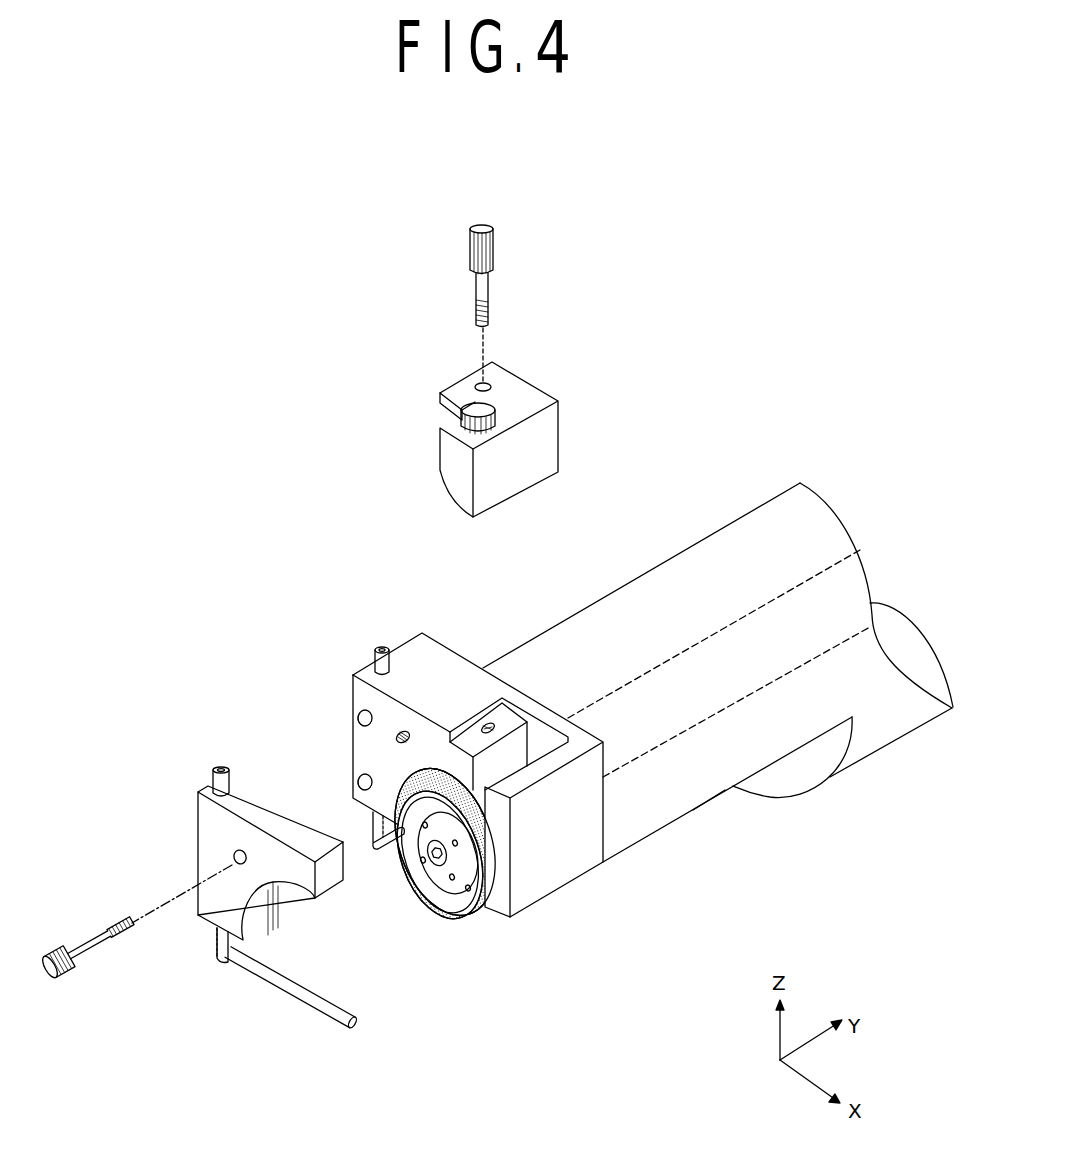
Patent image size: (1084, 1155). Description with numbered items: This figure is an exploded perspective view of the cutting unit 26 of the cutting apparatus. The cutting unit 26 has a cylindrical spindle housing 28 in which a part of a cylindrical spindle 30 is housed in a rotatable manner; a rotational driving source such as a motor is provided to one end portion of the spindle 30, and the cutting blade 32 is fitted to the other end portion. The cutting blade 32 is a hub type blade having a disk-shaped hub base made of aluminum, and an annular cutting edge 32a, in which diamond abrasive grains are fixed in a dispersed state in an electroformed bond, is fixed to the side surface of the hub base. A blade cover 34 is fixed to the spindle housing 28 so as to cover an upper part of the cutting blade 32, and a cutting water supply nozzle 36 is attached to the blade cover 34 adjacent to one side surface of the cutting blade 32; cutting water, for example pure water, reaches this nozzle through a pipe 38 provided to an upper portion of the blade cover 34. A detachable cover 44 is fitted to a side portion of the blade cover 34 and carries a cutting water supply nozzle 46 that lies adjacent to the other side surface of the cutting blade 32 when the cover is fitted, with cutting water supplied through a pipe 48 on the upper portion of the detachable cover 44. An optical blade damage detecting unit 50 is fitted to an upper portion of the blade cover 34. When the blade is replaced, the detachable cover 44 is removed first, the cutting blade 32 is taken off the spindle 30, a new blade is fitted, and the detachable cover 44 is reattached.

The cutting unit 26 is at (634, 899).
The spindle housing 28 is at (693, 788).
The spindle 30 is at (772, 618).
The cutting blade 32 is at (445, 922).
The annular cutting edge 32a is at (487, 915).
The blade cover 34 is at (437, 667).
The cutting water supply nozzle 36 is at (398, 847).
The pipe 38 is at (380, 646).
The detachable cover 44 is at (212, 815).
The cutting water supply nozzle 46 is at (290, 987).
The pipe 48 is at (218, 765).
The optical blade damage detecting unit 50 is at (540, 354).